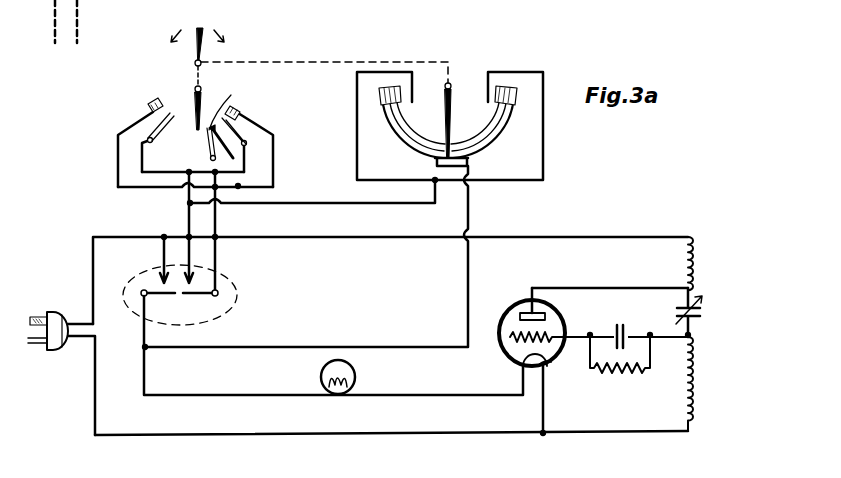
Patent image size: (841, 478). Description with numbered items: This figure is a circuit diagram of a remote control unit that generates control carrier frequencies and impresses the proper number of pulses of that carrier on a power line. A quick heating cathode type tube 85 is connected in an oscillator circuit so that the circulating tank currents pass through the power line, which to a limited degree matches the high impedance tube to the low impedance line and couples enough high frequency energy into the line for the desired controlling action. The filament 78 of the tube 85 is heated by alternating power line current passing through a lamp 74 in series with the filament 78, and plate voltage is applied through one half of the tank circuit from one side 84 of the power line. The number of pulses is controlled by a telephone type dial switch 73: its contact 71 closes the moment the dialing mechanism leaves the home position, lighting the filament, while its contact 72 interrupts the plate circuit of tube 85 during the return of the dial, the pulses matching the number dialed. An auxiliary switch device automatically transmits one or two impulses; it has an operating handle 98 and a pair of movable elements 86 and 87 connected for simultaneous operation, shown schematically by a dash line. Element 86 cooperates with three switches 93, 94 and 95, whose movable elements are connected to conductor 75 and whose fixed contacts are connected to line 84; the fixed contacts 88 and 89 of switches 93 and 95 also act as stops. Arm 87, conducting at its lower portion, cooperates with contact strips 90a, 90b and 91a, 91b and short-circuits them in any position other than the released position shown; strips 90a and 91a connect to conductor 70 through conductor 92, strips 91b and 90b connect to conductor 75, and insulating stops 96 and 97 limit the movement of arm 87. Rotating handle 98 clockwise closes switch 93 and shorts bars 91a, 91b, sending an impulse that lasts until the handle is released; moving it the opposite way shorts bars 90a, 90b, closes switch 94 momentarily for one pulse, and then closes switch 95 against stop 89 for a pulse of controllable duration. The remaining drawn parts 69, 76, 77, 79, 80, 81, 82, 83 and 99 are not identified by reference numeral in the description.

The plug 69 is at (60, 350).
The conductor 70 is at (333, 345).
The contact 71 is at (158, 283).
The contact 72 is at (198, 284).
The telephone type dial switch 73 is at (240, 297).
The lamp 74 is at (357, 377).
The conductor 75 is at (118, 236).
The plate 76 is at (527, 312).
The tube 77 is at (511, 325).
The filament 78 is at (552, 366).
The capacitor 79 is at (621, 324).
The resistor 80 is at (612, 372).
The variable capacitor 81 is at (705, 312).
The coil 82 is at (686, 268).
The coil 83 is at (686, 398).
The side of the power line 84 is at (425, 252).
The quick heating cathode type tube 85 is at (566, 317).
The movable element 86 is at (203, 98).
The movable element 87 is at (452, 128).
The fixed contact 88 is at (151, 106).
The fixed contact 89 is at (250, 112).
The contact strip 90a is at (490, 142).
The contact strip 90b is at (488, 100).
The contact strip 91a is at (398, 132).
The contact strip 91b is at (411, 128).
The conductor 92 is at (473, 206).
The switch 93 is at (170, 104).
The switch 94 is at (234, 108).
The switch 95 is at (242, 133).
The stop 96 is at (389, 87).
The stop 97 is at (512, 87).
The operating handle 98 is at (203, 38).
The conductor 99 is at (368, 434).